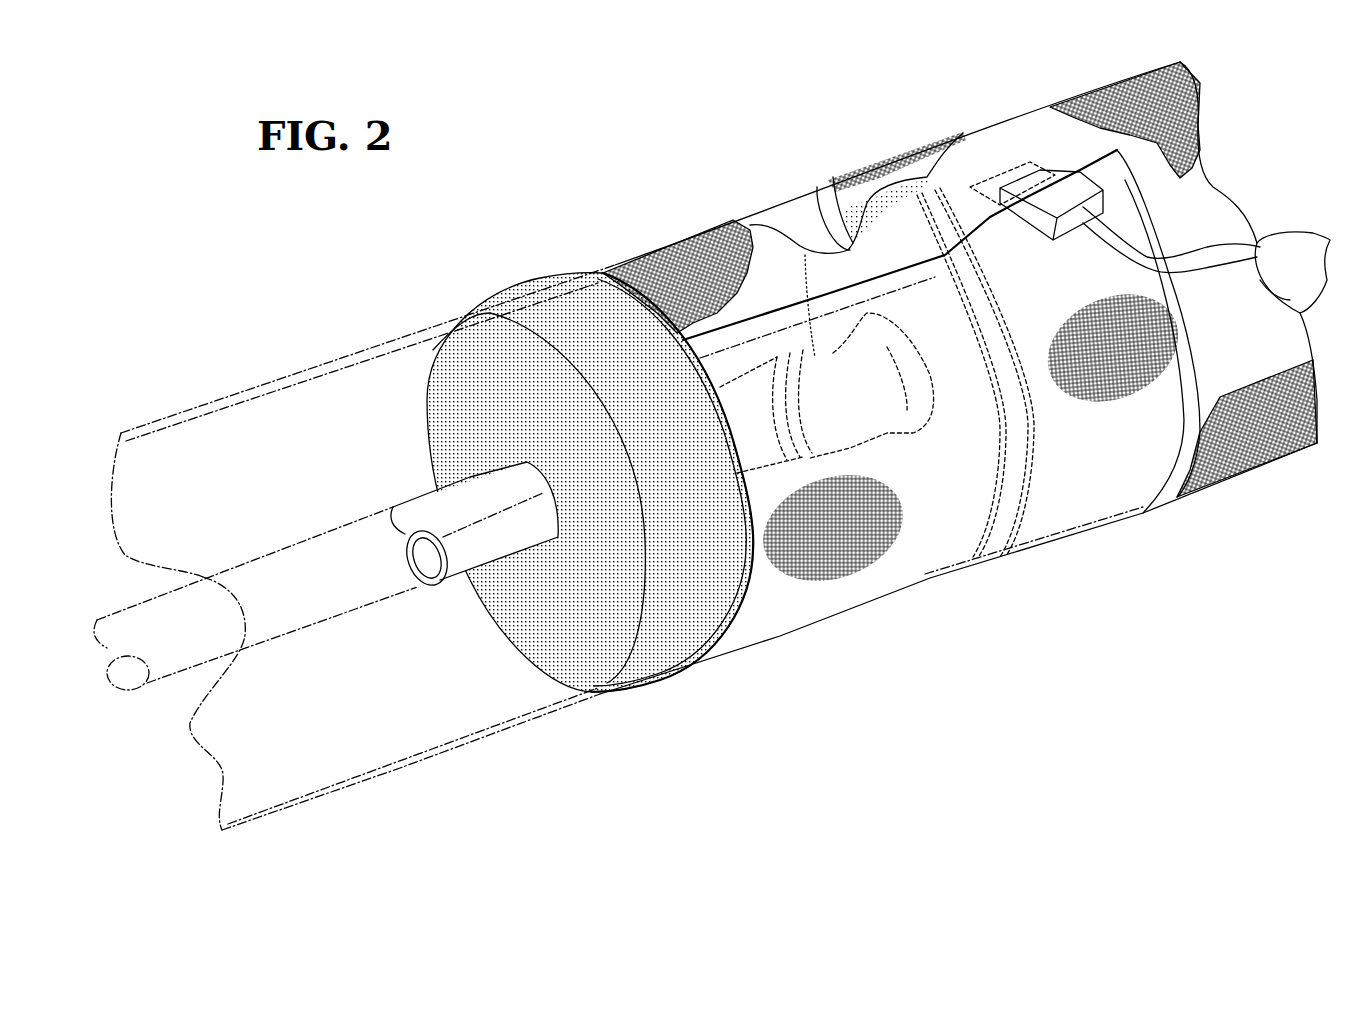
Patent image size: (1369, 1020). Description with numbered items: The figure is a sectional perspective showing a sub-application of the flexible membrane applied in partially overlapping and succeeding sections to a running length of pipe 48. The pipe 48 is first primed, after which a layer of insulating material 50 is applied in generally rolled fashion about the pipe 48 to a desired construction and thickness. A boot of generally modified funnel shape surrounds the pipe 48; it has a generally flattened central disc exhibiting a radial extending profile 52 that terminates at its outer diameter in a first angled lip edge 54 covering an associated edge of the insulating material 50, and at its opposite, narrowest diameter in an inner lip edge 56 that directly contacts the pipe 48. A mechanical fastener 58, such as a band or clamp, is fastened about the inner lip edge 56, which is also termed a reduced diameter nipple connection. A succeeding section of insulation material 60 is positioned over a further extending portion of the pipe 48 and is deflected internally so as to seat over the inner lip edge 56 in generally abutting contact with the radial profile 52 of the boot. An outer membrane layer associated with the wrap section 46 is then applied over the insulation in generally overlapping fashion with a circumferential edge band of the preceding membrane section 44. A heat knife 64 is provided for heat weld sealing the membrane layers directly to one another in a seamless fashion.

The membrane section 44 is at (1095, 95).
The wrap section 46 is at (268, 380).
The pipe 48 is at (430, 515).
The insulating material 50 is at (893, 190).
The radial extending profile 52 is at (828, 233).
The first angled lip edge 54 is at (912, 152).
The inner lip edge 56 is at (925, 470).
The mechanical fastener 58 is at (877, 520).
The succeeding section of insulation material 60 is at (546, 284).
The heat knife 64 is at (1293, 247).